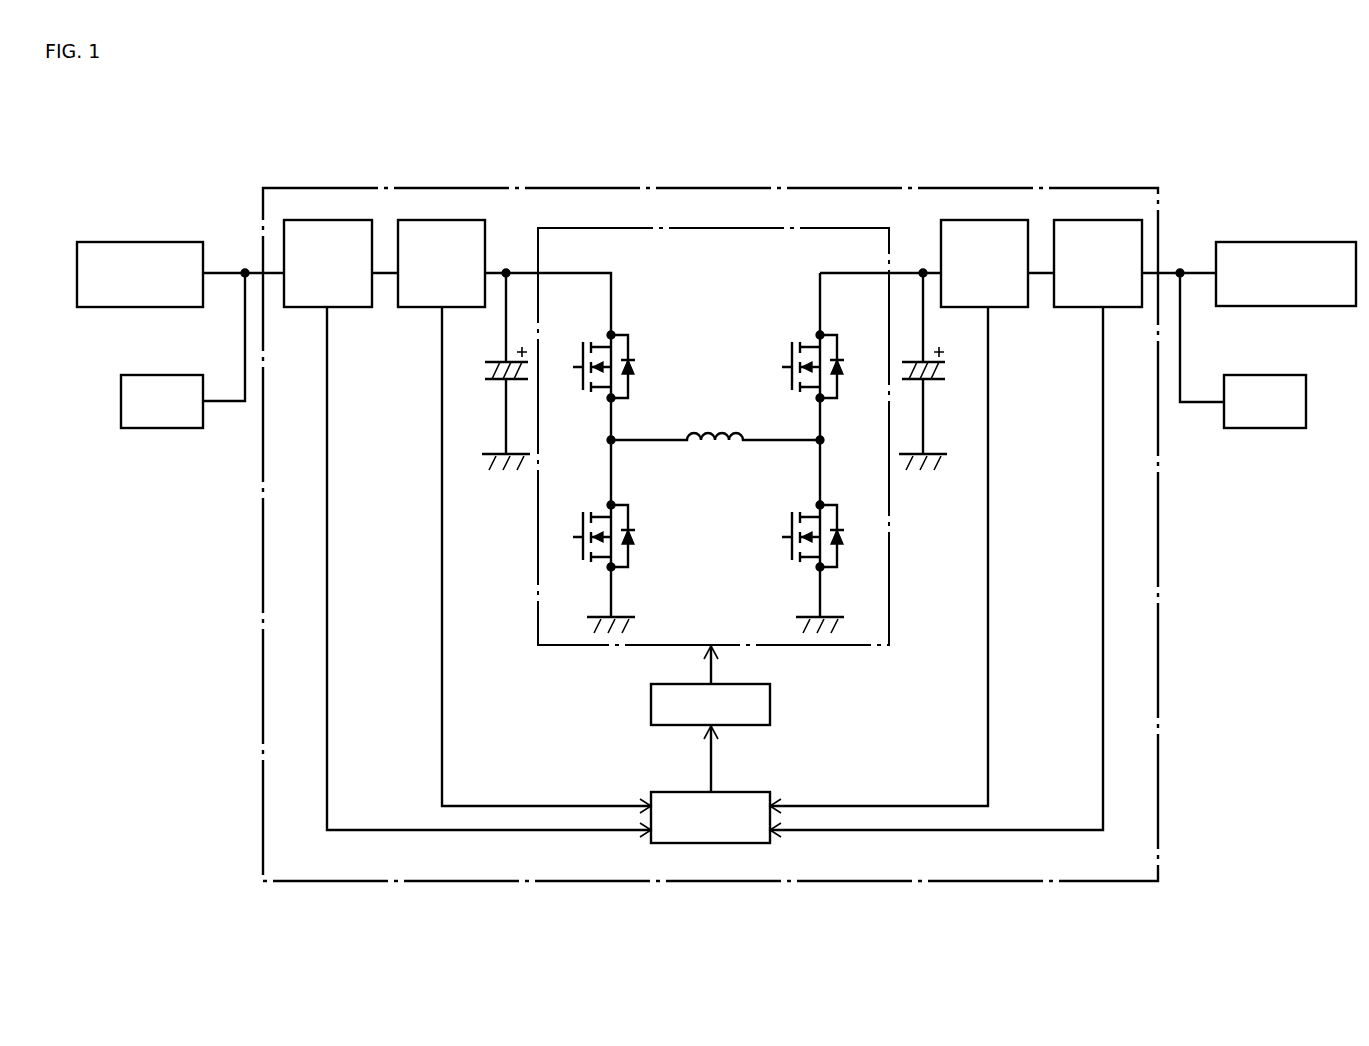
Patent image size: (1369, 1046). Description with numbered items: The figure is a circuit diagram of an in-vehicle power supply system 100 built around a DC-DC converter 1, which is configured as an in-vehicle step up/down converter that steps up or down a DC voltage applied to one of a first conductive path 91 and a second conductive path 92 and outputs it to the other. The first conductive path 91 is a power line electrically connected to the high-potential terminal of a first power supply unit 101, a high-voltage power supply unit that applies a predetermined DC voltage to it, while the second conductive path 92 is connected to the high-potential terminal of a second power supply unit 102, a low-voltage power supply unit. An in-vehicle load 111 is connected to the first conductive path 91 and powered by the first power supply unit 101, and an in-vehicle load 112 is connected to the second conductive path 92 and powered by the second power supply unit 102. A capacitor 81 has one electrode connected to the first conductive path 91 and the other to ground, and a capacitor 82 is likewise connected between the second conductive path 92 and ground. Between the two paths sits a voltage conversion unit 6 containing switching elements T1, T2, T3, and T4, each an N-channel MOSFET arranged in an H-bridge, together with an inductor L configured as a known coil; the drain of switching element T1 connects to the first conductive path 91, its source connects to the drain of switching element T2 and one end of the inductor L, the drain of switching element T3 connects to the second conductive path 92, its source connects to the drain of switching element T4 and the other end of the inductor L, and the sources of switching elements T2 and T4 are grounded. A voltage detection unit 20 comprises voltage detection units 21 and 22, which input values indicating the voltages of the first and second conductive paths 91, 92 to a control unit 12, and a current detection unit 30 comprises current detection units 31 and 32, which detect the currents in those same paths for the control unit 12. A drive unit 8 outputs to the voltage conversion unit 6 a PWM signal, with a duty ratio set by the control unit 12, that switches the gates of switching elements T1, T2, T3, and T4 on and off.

The in-vehicle power supply system 100 is at (1212, 143).
The DC-DC converter 1 is at (1085, 188).
The voltage conversion unit 6 is at (780, 228).
The drive unit 8 is at (771, 700).
The control unit 12 is at (755, 792).
The voltage detection unit 20 is at (779, 486).
The voltage detection unit 21 is at (337, 220).
The voltage detection unit 22 is at (1123, 223).
The current detection unit 30 is at (726, 474).
The current detection unit 31 is at (447, 220).
The current detection unit 32 is at (985, 220).
The first conductive path 91 is at (276, 278).
The second conductive path 92 is at (911, 270).
The capacitor 81 is at (494, 382).
The capacitor 82 is at (935, 382).
The first power supply unit 101 is at (122, 307).
The second power supply unit 102 is at (1283, 307).
The in-vehicle load 111 is at (156, 428).
The in-vehicle load 112 is at (1272, 428).
The switching element T1 is at (579, 352).
The switching element T2 is at (581, 522).
The switching element T3 is at (790, 351).
The switching element T4 is at (790, 522).
The inductor L is at (708, 425).